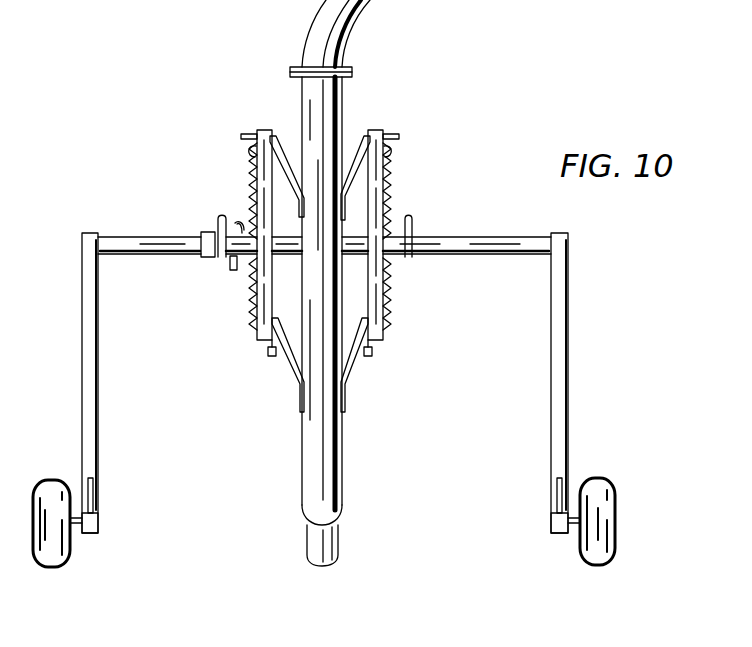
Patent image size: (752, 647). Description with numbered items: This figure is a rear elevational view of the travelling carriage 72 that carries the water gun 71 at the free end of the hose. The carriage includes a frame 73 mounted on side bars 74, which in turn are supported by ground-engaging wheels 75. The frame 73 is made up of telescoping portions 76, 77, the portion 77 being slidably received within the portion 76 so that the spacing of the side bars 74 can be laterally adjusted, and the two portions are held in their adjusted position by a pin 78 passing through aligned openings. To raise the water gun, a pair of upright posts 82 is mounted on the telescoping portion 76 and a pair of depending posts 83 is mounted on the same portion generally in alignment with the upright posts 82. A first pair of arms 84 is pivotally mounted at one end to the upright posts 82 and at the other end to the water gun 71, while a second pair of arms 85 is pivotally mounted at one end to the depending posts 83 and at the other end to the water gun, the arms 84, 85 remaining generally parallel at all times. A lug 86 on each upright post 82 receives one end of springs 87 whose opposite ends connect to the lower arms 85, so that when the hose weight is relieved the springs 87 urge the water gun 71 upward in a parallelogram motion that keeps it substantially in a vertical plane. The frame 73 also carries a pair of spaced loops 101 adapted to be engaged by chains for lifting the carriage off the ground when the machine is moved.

The water gun 71 is at (332, 437).
The travelling carriage 72 is at (583, 322).
The frame 73 is at (324, 240).
The side bars 74 is at (96, 521).
The ground-engaging wheels 75 is at (608, 490).
The telescoping portion 76 is at (441, 255).
The telescoping portion 77 is at (172, 237).
The pin 78 is at (233, 270).
The upright posts 82 is at (258, 130).
The depending posts 83 is at (268, 349).
The first pair of arms 84 is at (283, 148).
The second pair of arms 85 is at (292, 375).
The lug 86 is at (241, 137).
The springs 87 is at (249, 170).
The spaced loops 101 is at (218, 222).